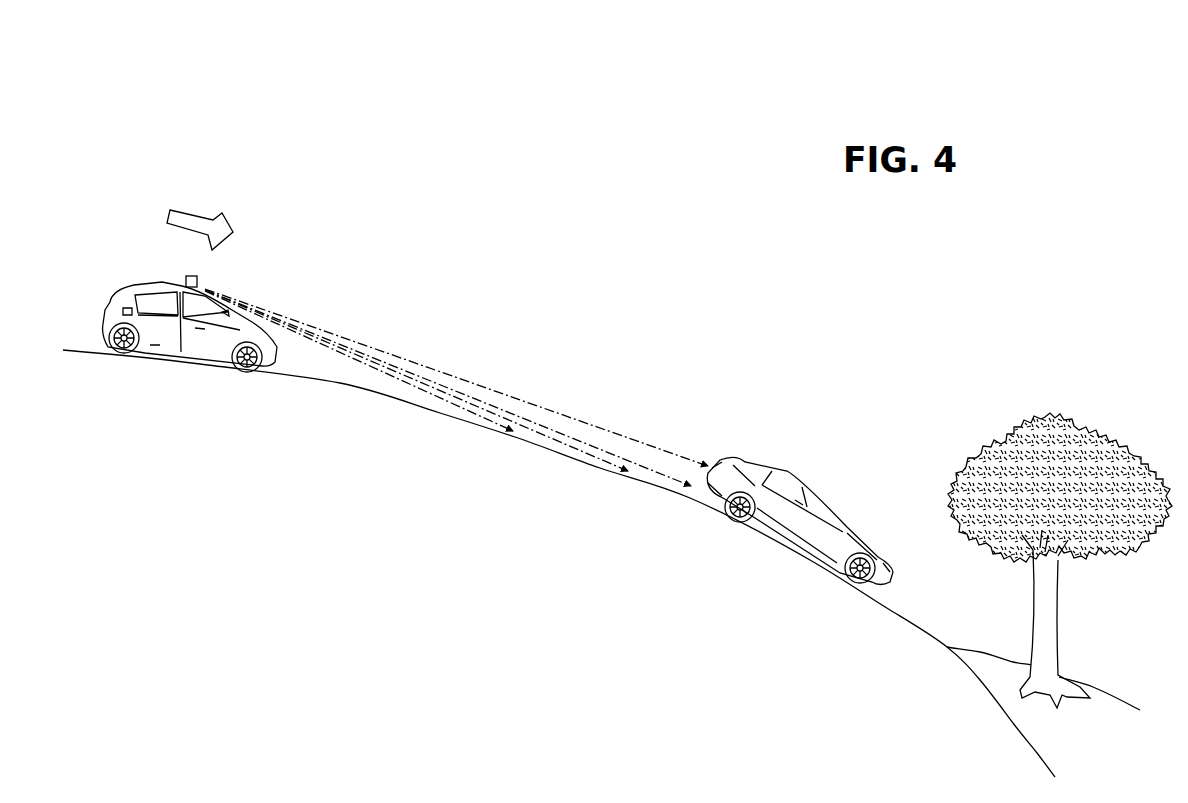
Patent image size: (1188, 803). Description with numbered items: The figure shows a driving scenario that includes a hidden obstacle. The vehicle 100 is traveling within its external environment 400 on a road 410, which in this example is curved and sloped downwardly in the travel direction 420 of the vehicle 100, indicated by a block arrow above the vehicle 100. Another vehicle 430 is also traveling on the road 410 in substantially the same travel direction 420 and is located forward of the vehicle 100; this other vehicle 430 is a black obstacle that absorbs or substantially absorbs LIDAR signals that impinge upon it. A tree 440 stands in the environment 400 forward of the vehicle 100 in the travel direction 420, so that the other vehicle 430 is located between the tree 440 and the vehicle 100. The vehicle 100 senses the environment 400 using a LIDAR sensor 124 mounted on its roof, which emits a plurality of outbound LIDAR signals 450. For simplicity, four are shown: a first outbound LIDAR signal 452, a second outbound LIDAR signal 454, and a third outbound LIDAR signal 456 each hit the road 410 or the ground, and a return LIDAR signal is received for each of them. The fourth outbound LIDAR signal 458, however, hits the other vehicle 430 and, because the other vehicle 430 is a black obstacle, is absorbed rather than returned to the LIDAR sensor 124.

The environment 400 is at (606, 22).
The vehicle 100 is at (183, 285).
The LIDAR sensor 124 is at (196, 279).
The road 410 is at (86, 348).
The travel direction 420 is at (203, 210).
The other vehicle 430 is at (812, 461).
The tree 440 is at (1050, 618).
The outbound LIDAR signals 450 is at (456, 415).
The first outbound LIDAR signal 452 is at (408, 383).
The second outbound LIDAR signal 454 is at (540, 435).
The third outbound LIDAR signal 456 is at (676, 478).
The fourth outbound LIDAR signal 458 is at (684, 458).